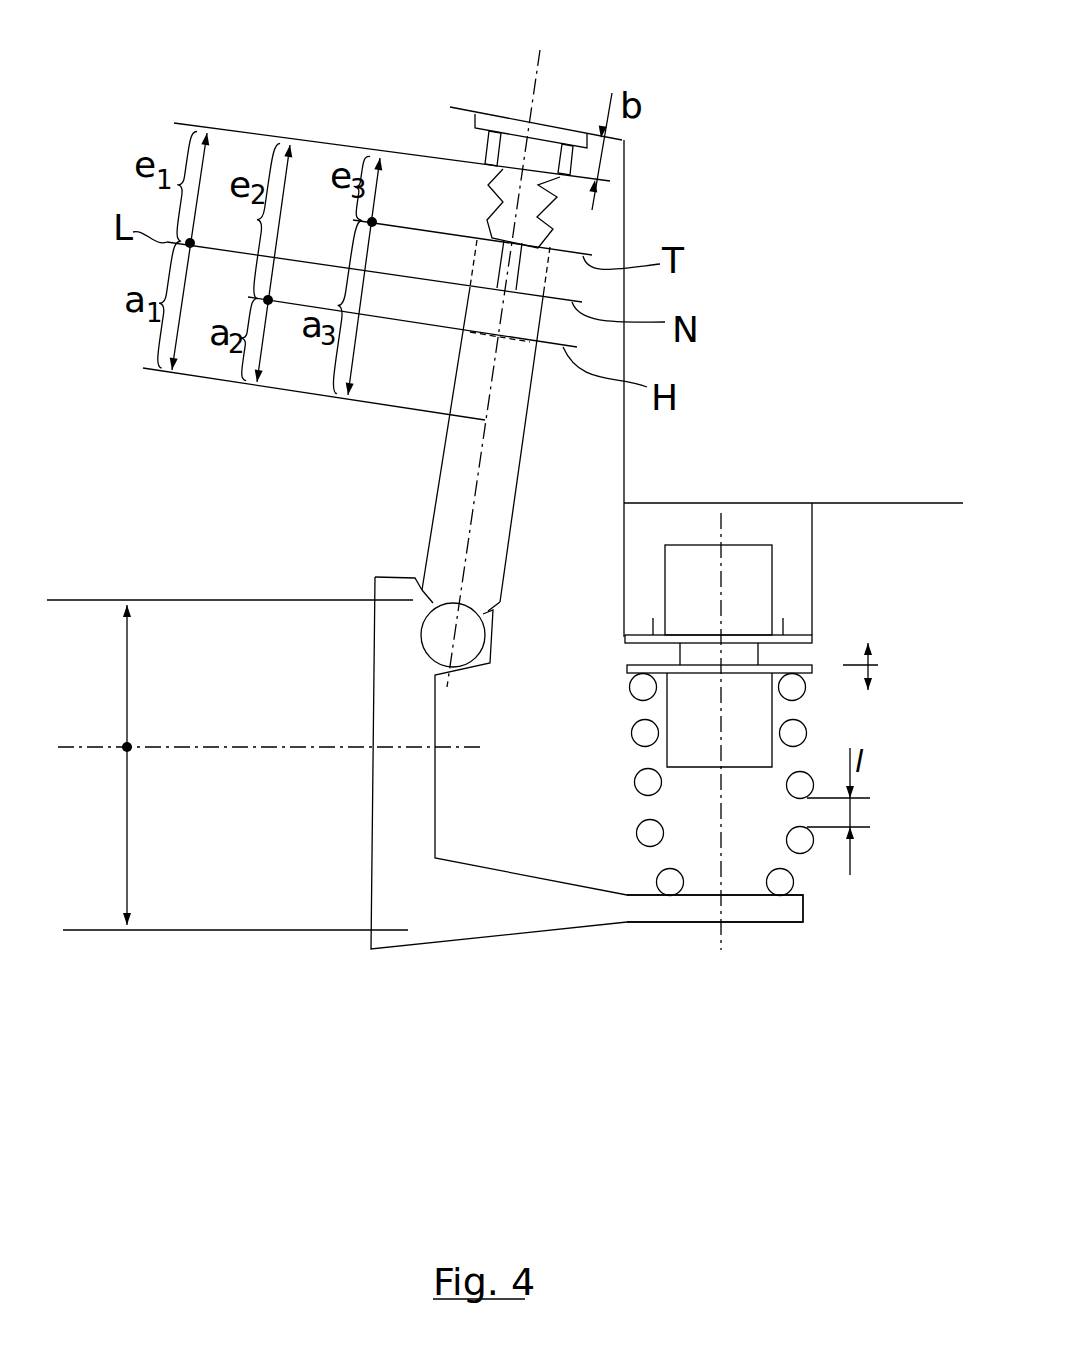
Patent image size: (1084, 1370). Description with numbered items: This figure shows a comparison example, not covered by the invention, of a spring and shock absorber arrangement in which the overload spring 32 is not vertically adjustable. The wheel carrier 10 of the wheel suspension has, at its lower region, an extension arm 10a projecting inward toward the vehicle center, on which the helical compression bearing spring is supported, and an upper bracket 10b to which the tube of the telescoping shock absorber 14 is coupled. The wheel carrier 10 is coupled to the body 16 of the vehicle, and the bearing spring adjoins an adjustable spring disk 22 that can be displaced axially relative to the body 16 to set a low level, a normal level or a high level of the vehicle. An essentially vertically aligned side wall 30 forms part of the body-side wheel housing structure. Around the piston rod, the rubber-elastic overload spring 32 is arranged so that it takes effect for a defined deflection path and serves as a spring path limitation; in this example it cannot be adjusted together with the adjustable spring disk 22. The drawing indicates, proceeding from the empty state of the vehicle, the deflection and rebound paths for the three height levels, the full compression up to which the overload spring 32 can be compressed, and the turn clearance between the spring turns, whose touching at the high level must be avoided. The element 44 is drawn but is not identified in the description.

The wheel carrier 10 is at (370, 847).
The extension arm 10a is at (772, 923).
The upper bracket 10b is at (393, 642).
The telescoping shock absorber 14 is at (432, 518).
The body 16 is at (800, 733).
The adjustable spring disk 22 is at (805, 663).
The side wall 30 is at (624, 200).
The overload spring 32 is at (505, 150).
The block 44 is at (750, 587).